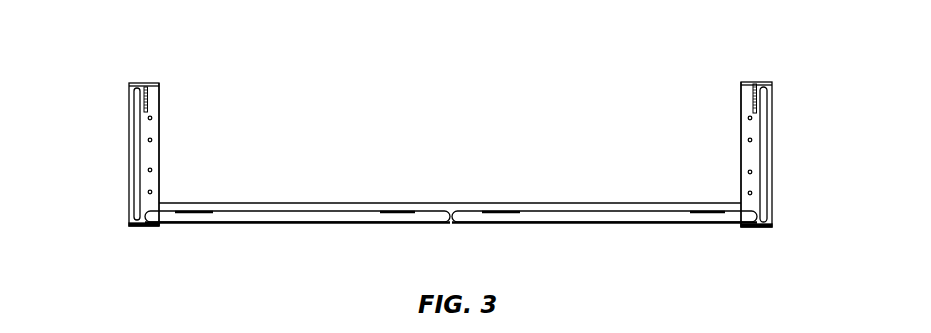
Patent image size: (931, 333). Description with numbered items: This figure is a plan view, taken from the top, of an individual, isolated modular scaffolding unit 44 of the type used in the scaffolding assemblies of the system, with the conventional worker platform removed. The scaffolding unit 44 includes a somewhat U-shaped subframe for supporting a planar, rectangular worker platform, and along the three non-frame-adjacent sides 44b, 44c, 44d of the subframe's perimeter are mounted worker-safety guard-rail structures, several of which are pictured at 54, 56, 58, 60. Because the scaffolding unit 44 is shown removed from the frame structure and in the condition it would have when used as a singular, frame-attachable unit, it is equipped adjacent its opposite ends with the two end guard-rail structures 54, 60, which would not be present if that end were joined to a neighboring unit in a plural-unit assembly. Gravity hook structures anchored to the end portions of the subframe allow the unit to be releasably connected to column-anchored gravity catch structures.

The scaffolding unit 44 is at (288, 46).
The non-frame-adjacent side 44b is at (106, 185).
The non-frame-adjacent side 44c is at (462, 233).
The non-frame-adjacent side 44d is at (789, 185).
The guard-rail structure 54 is at (136, 157).
The guard-rail structure 56 is at (298, 222).
The guard-rail structure 58 is at (605, 222).
The guard-rail structure 60 is at (764, 157).